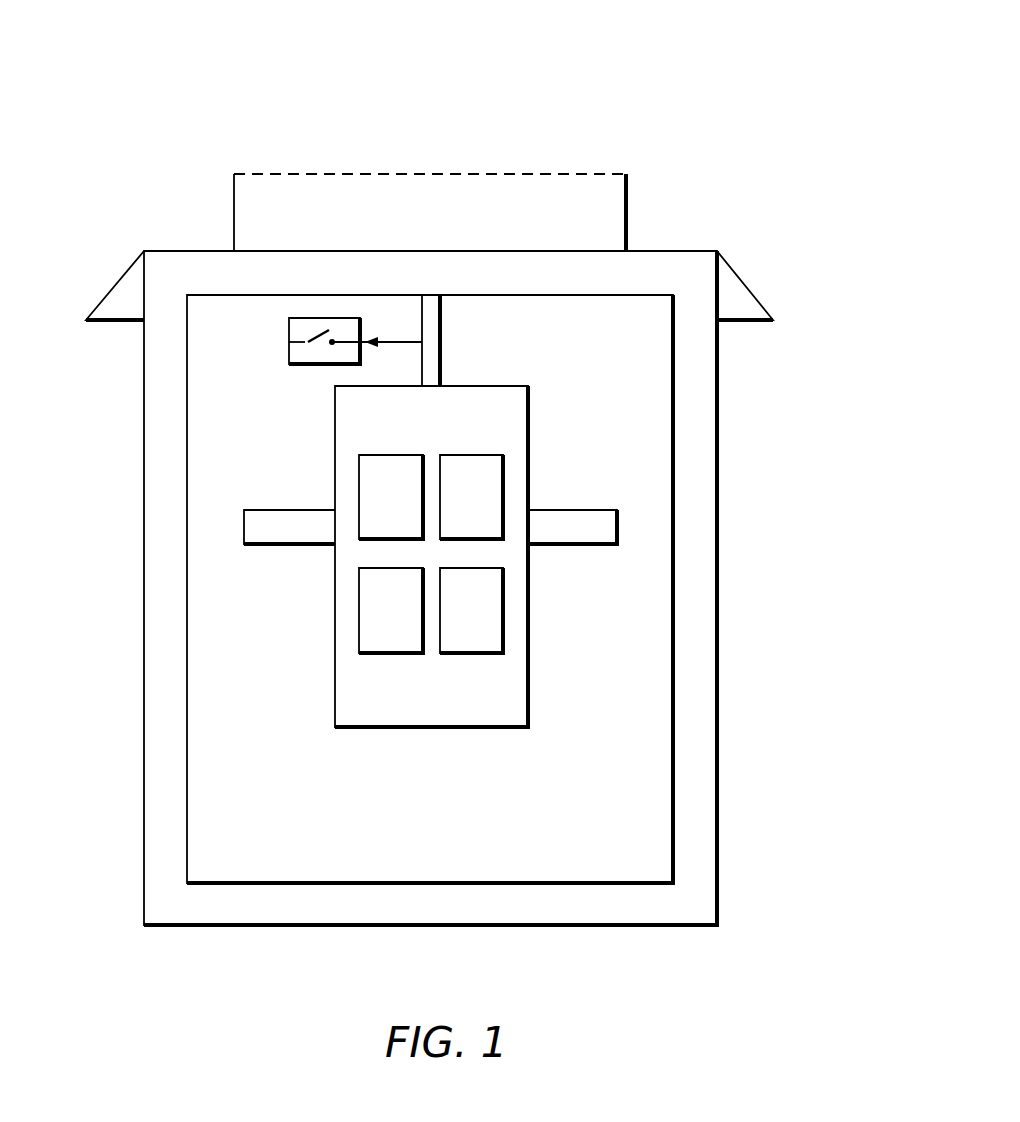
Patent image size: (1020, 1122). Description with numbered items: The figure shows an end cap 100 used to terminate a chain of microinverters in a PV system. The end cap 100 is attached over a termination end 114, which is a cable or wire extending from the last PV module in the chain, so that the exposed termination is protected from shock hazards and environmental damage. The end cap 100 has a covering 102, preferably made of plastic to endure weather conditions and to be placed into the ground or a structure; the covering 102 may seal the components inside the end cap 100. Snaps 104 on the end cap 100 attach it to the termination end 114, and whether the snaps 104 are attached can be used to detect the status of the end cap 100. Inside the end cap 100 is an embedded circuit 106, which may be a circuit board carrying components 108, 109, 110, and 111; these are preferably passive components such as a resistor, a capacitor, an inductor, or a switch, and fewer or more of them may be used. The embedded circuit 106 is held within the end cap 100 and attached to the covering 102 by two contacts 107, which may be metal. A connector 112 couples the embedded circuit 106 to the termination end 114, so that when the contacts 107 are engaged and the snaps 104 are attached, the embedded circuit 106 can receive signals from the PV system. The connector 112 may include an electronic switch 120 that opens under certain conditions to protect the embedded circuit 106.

The end cap 100 is at (584, 70).
The covering 102 is at (508, 927).
The snaps 104 is at (122, 276).
The embedded circuit 106 is at (512, 423).
The contacts 107 is at (294, 508).
The component 108 is at (414, 505).
The component 109 is at (414, 619).
The component 110 is at (495, 619).
The component 111 is at (495, 505).
The connector 112 is at (443, 332).
The termination end 114 is at (628, 202).
The electronic switch 120 is at (289, 342).